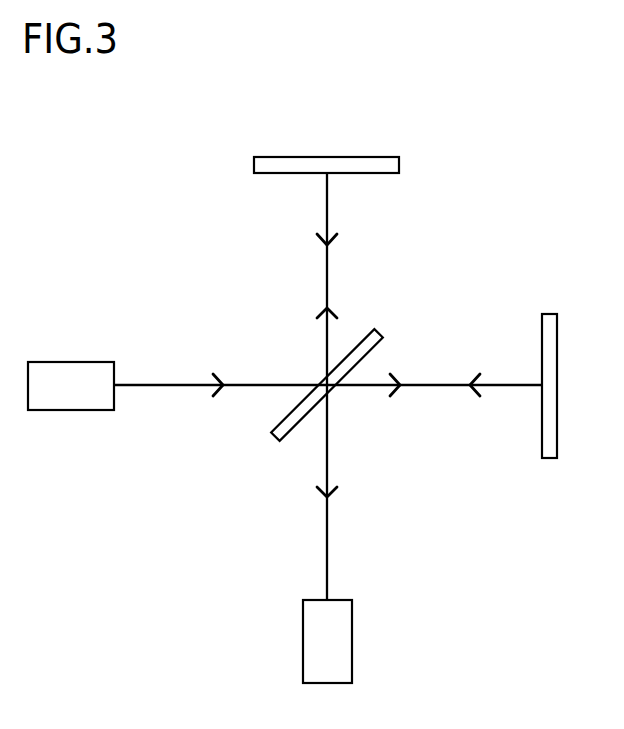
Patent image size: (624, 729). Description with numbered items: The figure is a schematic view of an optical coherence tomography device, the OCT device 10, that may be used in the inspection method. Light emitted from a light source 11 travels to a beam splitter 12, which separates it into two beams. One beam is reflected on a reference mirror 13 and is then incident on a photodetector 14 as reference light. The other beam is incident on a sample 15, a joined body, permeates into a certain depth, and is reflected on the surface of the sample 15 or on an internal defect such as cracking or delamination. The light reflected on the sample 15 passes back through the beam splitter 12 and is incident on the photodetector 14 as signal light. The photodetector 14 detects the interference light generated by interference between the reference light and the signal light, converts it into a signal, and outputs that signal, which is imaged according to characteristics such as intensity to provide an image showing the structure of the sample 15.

The OCT device 10 is at (105, 182).
The light source 11 is at (55, 372).
The beam splitter 12 is at (375, 336).
The reference mirror 13 is at (368, 166).
The photodetector 14 is at (313, 652).
The sample (joined body) 15 is at (549, 322).